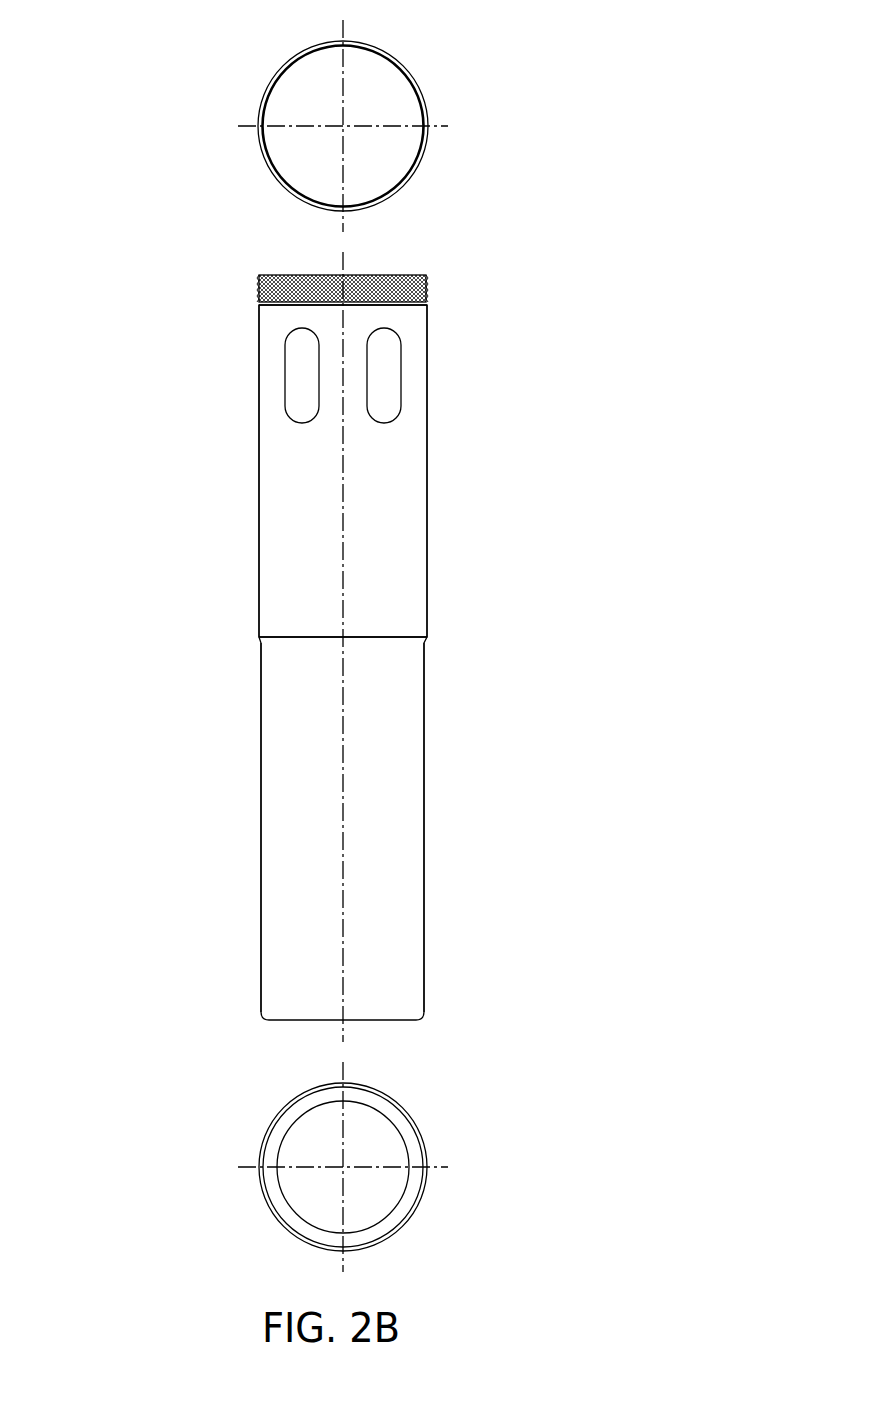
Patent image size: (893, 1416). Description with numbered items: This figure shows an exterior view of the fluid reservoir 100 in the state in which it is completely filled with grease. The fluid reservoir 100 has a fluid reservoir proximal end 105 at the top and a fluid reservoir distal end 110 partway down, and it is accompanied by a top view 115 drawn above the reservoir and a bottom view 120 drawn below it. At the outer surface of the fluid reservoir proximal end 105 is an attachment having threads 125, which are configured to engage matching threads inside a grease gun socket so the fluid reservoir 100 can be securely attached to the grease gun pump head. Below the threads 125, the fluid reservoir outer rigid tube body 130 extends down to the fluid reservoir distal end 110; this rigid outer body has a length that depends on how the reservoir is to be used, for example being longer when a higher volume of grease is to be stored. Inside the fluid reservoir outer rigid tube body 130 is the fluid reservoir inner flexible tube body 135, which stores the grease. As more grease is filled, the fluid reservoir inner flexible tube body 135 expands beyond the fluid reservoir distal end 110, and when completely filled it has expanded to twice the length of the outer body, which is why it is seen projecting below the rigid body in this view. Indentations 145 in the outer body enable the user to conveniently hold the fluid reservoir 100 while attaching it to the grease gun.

The fluid reservoir 100 is at (175, 276).
The fluid reservoir proximal end 105 is at (400, 276).
The fluid reservoir distal end 110 is at (382, 637).
The top view 115 is at (443, 78).
The bottom view 120 is at (445, 1112).
The threads 125 is at (426, 283).
The fluid reservoir outer rigid tube body 130 is at (427, 532).
The fluid reservoir inner flexible tube body 135 is at (424, 887).
The indentations 145 is at (382, 387).